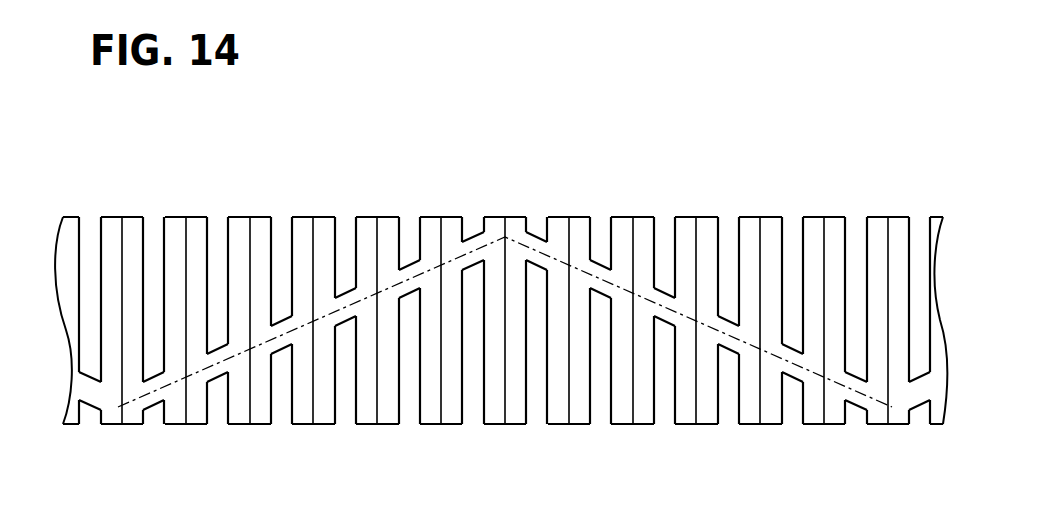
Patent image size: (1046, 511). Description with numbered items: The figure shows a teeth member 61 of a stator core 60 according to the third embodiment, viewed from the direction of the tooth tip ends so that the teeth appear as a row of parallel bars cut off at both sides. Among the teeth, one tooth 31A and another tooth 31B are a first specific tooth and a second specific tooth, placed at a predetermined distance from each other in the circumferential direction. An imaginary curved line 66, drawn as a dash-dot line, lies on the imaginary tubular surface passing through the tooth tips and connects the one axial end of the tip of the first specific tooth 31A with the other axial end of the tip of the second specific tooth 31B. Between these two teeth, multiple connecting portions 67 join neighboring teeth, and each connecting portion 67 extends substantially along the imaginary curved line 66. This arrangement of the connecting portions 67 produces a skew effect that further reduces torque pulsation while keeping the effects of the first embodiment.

The stator core 60 is at (501, 295).
The teeth member 61 is at (448, 215).
The imaginary curved line 66 is at (321, 323).
The connecting portions 67 is at (345, 290).
The first specific tooth 31A is at (520, 385).
The second specific tooth 31B is at (110, 258).